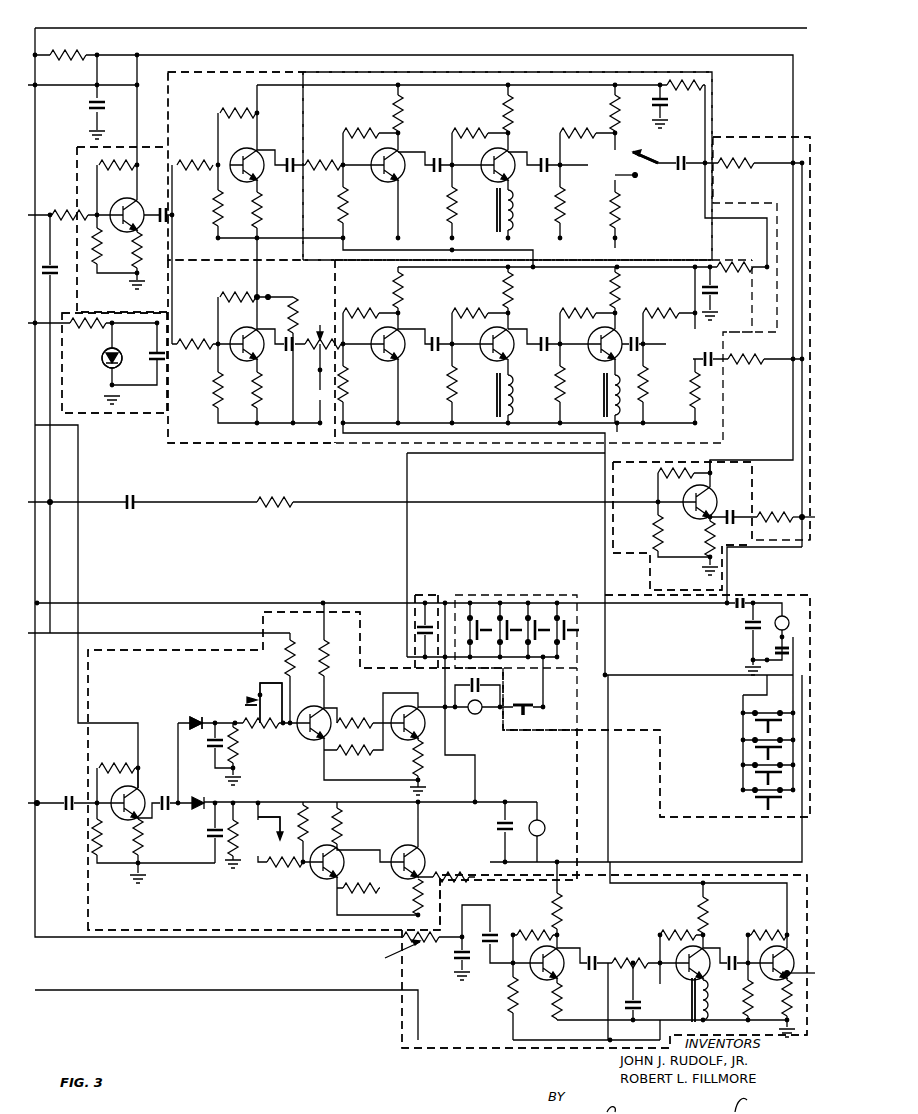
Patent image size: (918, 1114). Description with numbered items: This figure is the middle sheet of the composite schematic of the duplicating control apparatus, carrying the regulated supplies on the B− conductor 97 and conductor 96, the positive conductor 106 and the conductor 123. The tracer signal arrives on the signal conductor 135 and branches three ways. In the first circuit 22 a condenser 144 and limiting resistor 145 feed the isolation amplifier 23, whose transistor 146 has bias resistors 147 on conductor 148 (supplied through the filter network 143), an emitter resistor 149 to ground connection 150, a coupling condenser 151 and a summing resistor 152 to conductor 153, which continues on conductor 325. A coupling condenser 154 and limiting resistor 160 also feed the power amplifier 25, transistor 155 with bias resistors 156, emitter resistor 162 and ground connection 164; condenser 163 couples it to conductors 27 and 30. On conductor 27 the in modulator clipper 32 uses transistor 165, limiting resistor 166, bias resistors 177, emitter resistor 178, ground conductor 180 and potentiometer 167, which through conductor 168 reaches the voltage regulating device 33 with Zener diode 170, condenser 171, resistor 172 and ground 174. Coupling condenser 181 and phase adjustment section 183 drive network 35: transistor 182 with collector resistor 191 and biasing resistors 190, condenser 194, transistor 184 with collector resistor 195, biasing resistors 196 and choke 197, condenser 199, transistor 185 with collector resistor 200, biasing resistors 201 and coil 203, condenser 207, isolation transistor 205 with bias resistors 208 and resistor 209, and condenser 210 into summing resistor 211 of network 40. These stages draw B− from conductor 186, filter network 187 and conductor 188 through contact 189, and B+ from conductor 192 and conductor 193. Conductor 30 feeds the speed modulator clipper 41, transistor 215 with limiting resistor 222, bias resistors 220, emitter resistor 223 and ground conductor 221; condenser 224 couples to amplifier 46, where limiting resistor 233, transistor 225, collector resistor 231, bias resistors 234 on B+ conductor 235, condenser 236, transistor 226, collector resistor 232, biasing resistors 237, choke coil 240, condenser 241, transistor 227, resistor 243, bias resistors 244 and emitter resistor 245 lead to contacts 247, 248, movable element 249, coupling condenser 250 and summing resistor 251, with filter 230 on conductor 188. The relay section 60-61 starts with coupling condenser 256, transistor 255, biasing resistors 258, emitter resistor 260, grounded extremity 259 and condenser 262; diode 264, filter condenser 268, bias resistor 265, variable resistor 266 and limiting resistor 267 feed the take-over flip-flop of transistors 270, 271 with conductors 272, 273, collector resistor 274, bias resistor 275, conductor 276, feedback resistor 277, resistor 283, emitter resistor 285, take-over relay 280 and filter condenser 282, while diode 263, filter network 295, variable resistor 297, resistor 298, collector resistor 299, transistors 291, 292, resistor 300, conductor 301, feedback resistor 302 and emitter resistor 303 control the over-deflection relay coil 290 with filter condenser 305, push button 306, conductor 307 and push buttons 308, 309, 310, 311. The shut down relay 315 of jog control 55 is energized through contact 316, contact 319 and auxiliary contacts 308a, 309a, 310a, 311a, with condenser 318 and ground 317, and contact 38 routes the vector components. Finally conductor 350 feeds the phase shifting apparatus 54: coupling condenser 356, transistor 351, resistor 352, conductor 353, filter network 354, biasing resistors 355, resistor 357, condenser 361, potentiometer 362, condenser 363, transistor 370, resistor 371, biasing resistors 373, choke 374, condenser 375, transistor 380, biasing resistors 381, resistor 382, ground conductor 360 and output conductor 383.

The B− conductor 97 is at (322, 30).
The conductor 148 is at (388, 54).
The filter network 143 is at (92, 100).
The limiting resistor 160 is at (68, 208).
The bias resistors 156 is at (108, 164).
The transistor 155 is at (130, 198).
The condenser 163 is at (162, 207).
The resistor 162 is at (139, 244).
The ground connection 164 is at (142, 295).
The coupling condenser 154 is at (52, 290).
The conductor 30 is at (174, 210).
The conductor 27 is at (180, 238).
The power amplifier 25 is at (107, 291).
The speed vector modulator clipper 41 is at (205, 107).
The limiting resistor 222 is at (202, 158).
The bias resistors 220 is at (255, 117).
The transistor 215 is at (263, 152).
The condenser 224 is at (290, 173).
The resistor 223 is at (261, 220).
The ground conductor 221 is at (246, 239).
The phase shifting and isolation amplifier 46 is at (363, 99).
The limiting resistor 233 is at (330, 151).
The collector resistor 231 is at (403, 110).
The transistor 225 is at (400, 150).
The bias resistors 234 is at (349, 180).
The condenser 236 is at (436, 175).
The B+ conductor 235 is at (386, 249).
The collector resistor 232 is at (513, 110).
The transistor 226 is at (508, 150).
The biasing resistors 237 is at (458, 180).
The condenser 241 is at (546, 175).
The choke coil 240 is at (516, 212).
The resistor 243 is at (614, 108).
The transistor 227 is at (610, 130).
The bias resistors 244 is at (568, 190).
The emitter resistor 245 is at (612, 215).
The stationary contact 247 is at (646, 155).
The stationary contact 248 is at (636, 179).
The movable element 249 is at (680, 171).
The coupling condenser 250 is at (682, 154).
The filter 230 is at (673, 96).
The conductor 188 is at (706, 130).
The summing network 40 is at (772, 136).
The summing resistor 251 is at (749, 168).
The in signal modulator clipper 32 is at (205, 286).
The conductor 168 is at (258, 296).
The adjustable potentiometer 167 is at (300, 297).
The limiting resistor 166 is at (200, 340).
The bias resistors 177 is at (235, 299).
The transistor 165 is at (262, 335).
The phase adjustment section 183 is at (323, 330).
The coupling condenser 181 is at (288, 352).
The resistor 178 is at (255, 400).
The ground conductor 180 is at (280, 424).
The resistor 172 is at (80, 327).
The Zener diode 170 is at (122, 351).
The voltage regulating device 33 is at (90, 366).
The filter condenser 171 is at (150, 362).
The ground 174 is at (124, 400).
The signal conductor 135 is at (79, 450).
The first circuit 22 is at (121, 494).
The condenser 144 is at (141, 498).
The limiting resistor 145 is at (290, 500).
The B− conductor 123 is at (80, 551).
The in vector phase adjusting and isolation amplifier network 35 is at (372, 277).
The collector resistor 191 is at (403, 290).
The collector resistor 195 is at (505, 290).
The biasing resistors 196 is at (471, 311).
The transistor 182 is at (400, 328).
The transistor 184 is at (483, 335).
The condenser 199 is at (545, 335).
The biasing resistors 190 is at (348, 375).
The condenser 194 is at (436, 353).
The choke 197 is at (497, 400).
The collector resistor 200 is at (605, 284).
The transistor 185 is at (618, 312).
The biasing resistors 201 is at (588, 346).
The condenser 207 is at (562, 380).
The inductance coil 203 is at (604, 405).
The transistor 205 is at (700, 330).
The summing resistor 211 is at (746, 355).
The bias resistors 208 is at (648, 370).
The resistor 209 is at (690, 400).
The condenser 210 is at (712, 366).
The conductor 186 is at (660, 268).
The filter network 187 is at (719, 290).
The B+ conductor 192 is at (350, 440).
The isolation amplifier 23 is at (641, 494).
The bias resistors 147 is at (660, 472).
The transistor 146 is at (712, 489).
The conductor 153 is at (800, 481).
The coupling condenser 151 is at (741, 499).
The summing resistor 152 is at (773, 511).
The resistor 149 is at (706, 530).
The conductor 325 is at (800, 525).
The ground connection 150 is at (705, 568).
The shut down relay 315 is at (780, 612).
The normally open contact 316 is at (735, 605).
The jog control 55 is at (641, 637).
The condenser 318 is at (751, 626).
The contact 319 is at (776, 651).
The ground 317 is at (750, 667).
The auxiliary contact 308a is at (754, 718).
The auxiliary contact 309a is at (754, 745).
The auxiliary contact 310a is at (754, 770).
The auxiliary contact 311a is at (754, 795).
The conductor 193 is at (610, 770).
The conductor 350 is at (712, 862).
The normally closed contact 38 is at (420, 600).
The normally open contact 189 is at (416, 630).
The push button 308 is at (476, 620).
The push button 309 is at (506, 620).
The push button 310 is at (534, 620).
The push button 311 is at (563, 620).
The resistor 298 is at (293, 645).
The collector resistor 299 is at (333, 655).
The transistor 291 is at (319, 705).
The variable resistor 297 is at (254, 700).
The diode 263 is at (193, 717).
The filter network 295 is at (240, 745).
The diode 264 is at (215, 755).
The biasing resistors 258 is at (110, 767).
The coupling condenser 256 is at (71, 796).
The transistor 255 is at (140, 795).
The conductor 96 is at (40, 806).
The condenser 262 is at (170, 808).
The emitter resistor 260 is at (146, 838).
The filter condenser 268 is at (211, 840).
The grounded extremity 259 is at (131, 880).
The variable resistor 266 is at (262, 800).
The bias resistor 265 is at (233, 863).
The limiting resistor 267 is at (276, 870).
The conductor 276 is at (337, 913).
The conductor 106 is at (110, 633).
The over-deflection and take-over relays 60-61 is at (168, 682).
The resistor 300 is at (347, 720).
The transistor 292 is at (417, 705).
The filter condenser 305 is at (483, 685).
The conductor 307 is at (546, 698).
The over-deflection relay coil 290 is at (474, 715).
The push button 306 is at (536, 711).
The feedback resistor 302 is at (356, 755).
The conductor 301 is at (415, 785).
The emitter resistor 303 is at (423, 760).
The conductor 272 is at (476, 768).
The bias resistor 275 is at (309, 810).
The collector resistor 274 is at (341, 812).
The conductor 273 is at (436, 802).
The transistor 270 is at (341, 850).
The transistor 271 is at (425, 851).
The filter condenser 282 is at (513, 825).
The take-over relay 280 is at (546, 830).
The feedback resistor 277 is at (361, 885).
The emitter resistor 285 is at (415, 899).
The resistor 283 is at (455, 881).
The conductor 353 is at (492, 934).
The filter network 354 is at (398, 949).
The biasing resistors 355 is at (512, 985).
The coupling condenser 356 is at (463, 971).
The phase shifting apparatus 54 is at (402, 1031).
The resistor 352 is at (563, 910).
The transistor 351 is at (561, 950).
The condenser 361 is at (592, 971).
The resistor 357 is at (555, 1010).
The condenser 363 is at (628, 1005).
The potentiometer 362 is at (640, 960).
The resistor 371 is at (700, 896).
The transistor 370 is at (694, 945).
The biasing resistors 373 is at (665, 934).
The condenser 375 is at (731, 955).
The transistor 380 is at (778, 930).
The conductor 383 is at (796, 950).
The biasing resistors 381 is at (752, 982).
The choke 374 is at (706, 1005).
The resistor 382 is at (789, 1008).
The ground conductor 360 is at (770, 1022).